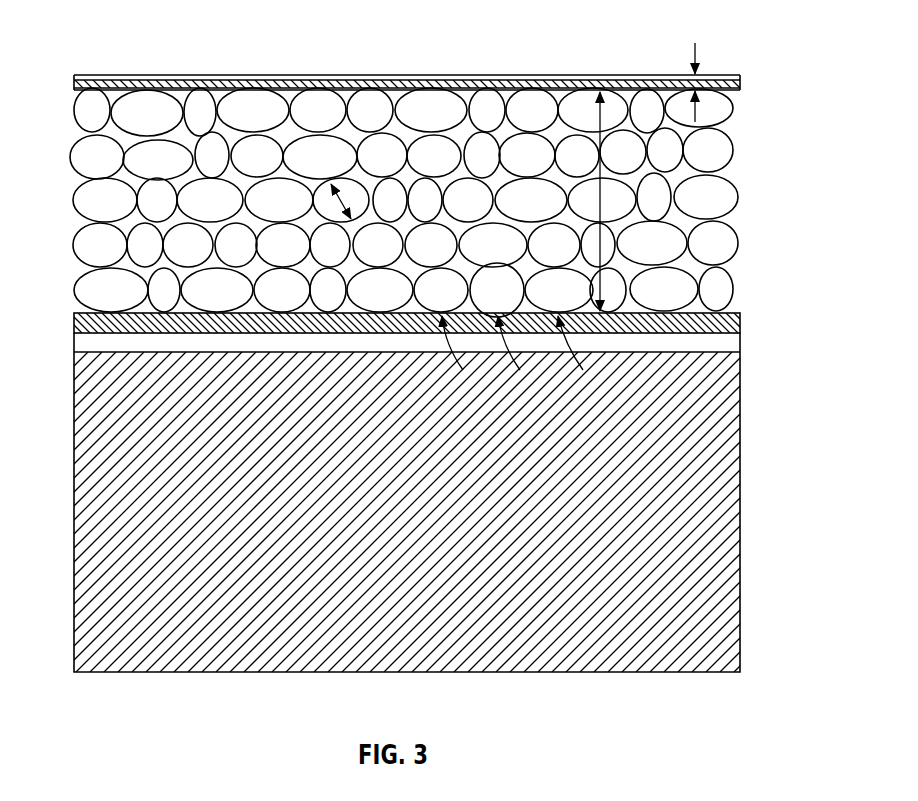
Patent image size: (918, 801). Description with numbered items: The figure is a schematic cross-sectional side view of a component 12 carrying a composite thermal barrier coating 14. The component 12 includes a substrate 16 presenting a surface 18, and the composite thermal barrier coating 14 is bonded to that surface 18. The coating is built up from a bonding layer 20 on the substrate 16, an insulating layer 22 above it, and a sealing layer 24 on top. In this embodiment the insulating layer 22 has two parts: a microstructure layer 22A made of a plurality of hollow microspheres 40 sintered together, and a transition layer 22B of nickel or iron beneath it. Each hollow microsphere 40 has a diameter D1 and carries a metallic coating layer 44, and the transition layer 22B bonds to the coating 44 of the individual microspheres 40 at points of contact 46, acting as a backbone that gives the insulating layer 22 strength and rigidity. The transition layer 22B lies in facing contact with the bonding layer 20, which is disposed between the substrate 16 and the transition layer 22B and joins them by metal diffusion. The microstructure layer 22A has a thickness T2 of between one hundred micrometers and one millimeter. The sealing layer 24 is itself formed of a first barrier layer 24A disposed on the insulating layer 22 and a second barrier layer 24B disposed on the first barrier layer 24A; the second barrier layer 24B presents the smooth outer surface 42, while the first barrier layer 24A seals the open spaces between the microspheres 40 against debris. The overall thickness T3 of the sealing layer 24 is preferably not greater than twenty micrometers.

The component 12 is at (116, 50).
The composite thermal barrier coating 14 is at (750, 76).
The substrate 16 is at (92, 462).
The surface 18 is at (92, 349).
The bonding layer 20 is at (283, 342).
The insulating layer 22 is at (432, 142).
The microstructure layer 22A is at (733, 285).
The transition layer 22B is at (665, 323).
The sealing layer 24 is at (460, 83).
The first barrier layer 24A is at (508, 78).
The second barrier layer 24B is at (562, 78).
The hollow microspheres 40 is at (143, 158).
The outer surface 42 is at (196, 73).
The metallic coating layer 44 is at (350, 83).
The points of contact 46 is at (519, 357).
The diameter D1 is at (323, 217).
The thickness of the microstructure layer T2 is at (603, 127).
The thickness of the sealing layer T3 is at (699, 62).